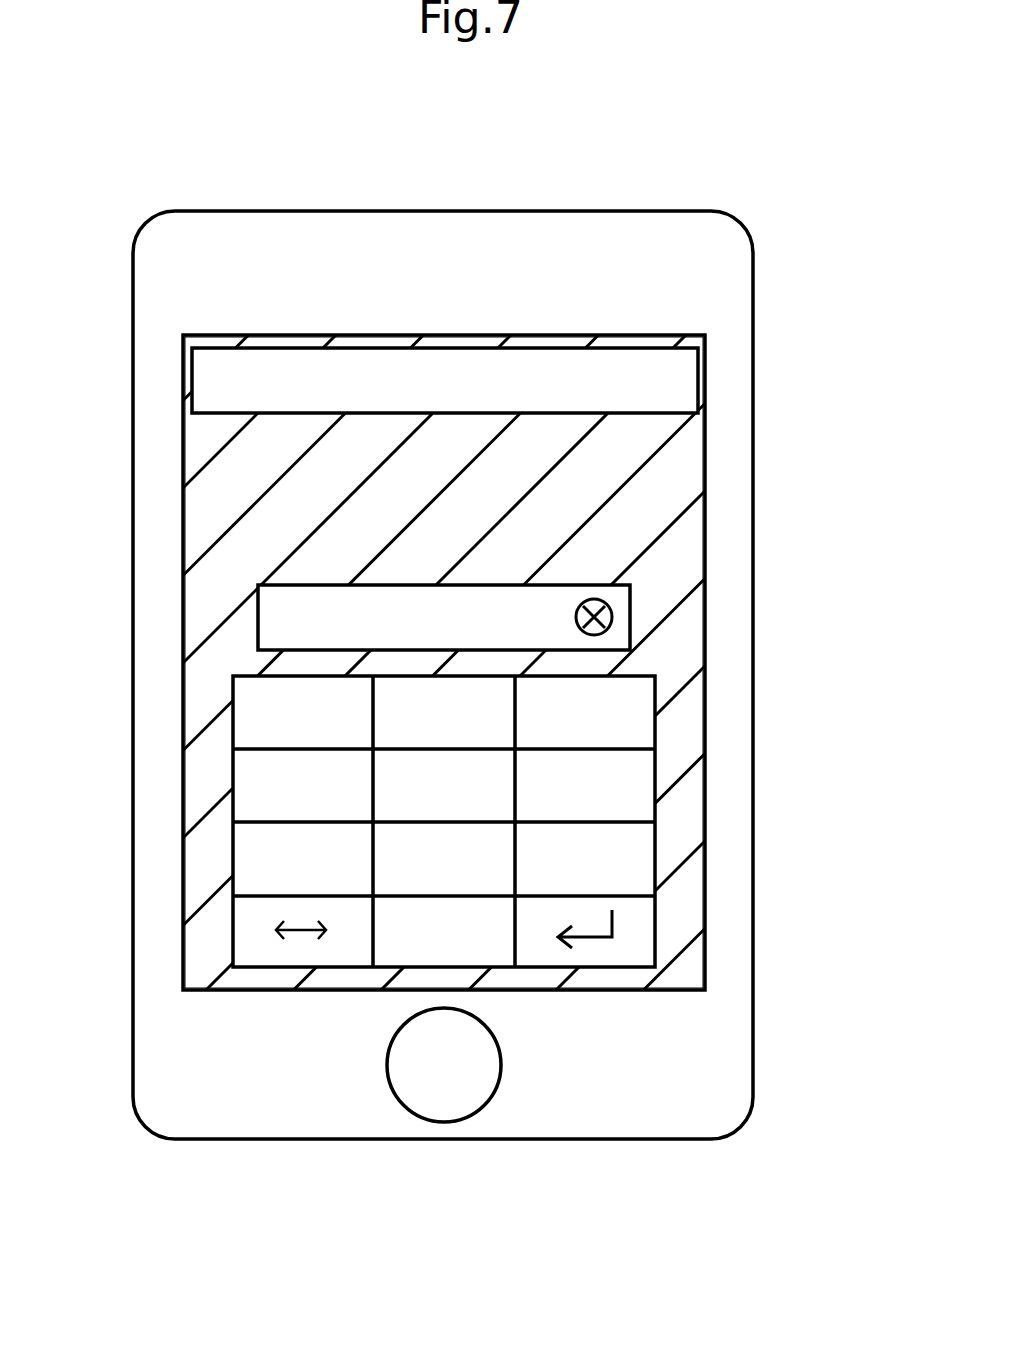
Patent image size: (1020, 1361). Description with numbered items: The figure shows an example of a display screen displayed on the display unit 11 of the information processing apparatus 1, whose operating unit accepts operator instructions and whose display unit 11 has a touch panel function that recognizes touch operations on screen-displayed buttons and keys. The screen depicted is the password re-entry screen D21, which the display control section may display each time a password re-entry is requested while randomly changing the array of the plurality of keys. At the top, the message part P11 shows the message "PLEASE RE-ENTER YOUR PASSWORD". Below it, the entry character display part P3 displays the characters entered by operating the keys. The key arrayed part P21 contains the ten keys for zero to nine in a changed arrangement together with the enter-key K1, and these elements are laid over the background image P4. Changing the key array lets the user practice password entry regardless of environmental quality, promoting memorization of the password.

The information processing apparatus 1 is at (272, 1208).
The display unit 11 is at (705, 588).
The password re-entry screen D21 is at (705, 460).
The background image P4 is at (685, 730).
The message part P11 is at (233, 417).
The entry character display part P3 is at (258, 620).
The key arrayed part P21 is at (230, 770).
The enter-key K1 is at (637, 935).